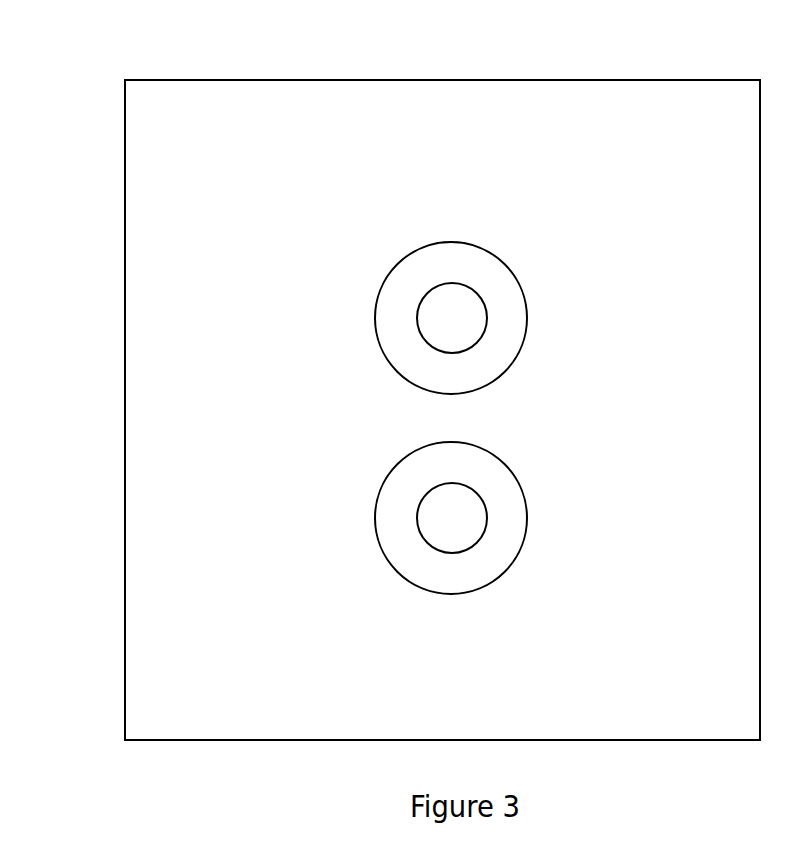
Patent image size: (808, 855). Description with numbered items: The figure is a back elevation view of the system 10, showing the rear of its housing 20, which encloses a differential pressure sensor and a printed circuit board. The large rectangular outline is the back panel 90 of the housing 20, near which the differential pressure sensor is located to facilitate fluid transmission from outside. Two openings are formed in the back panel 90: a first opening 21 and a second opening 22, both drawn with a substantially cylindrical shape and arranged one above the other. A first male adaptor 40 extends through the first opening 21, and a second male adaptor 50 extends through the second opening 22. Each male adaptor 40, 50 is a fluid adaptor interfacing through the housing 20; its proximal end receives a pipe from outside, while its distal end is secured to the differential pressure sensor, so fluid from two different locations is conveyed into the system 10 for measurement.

The system 10 is at (41, 62).
The housing 20 is at (342, 80).
The first opening 21 is at (522, 285).
The second opening 22 is at (522, 485).
The first male adaptor 40 is at (447, 326).
The second male adaptor 50 is at (447, 526).
The back panel 90 is at (149, 719).